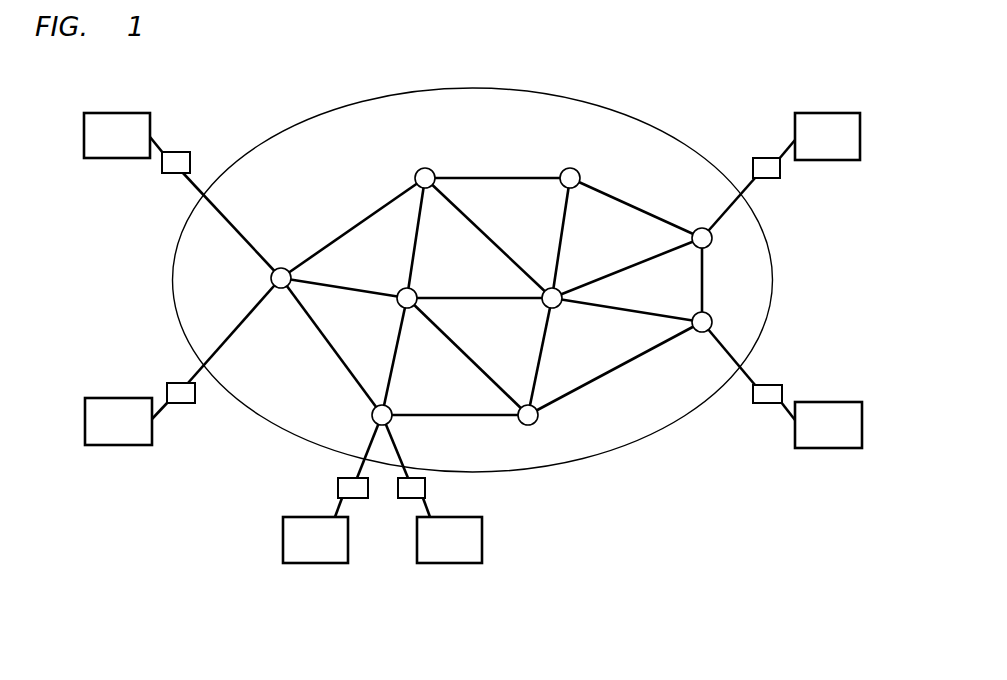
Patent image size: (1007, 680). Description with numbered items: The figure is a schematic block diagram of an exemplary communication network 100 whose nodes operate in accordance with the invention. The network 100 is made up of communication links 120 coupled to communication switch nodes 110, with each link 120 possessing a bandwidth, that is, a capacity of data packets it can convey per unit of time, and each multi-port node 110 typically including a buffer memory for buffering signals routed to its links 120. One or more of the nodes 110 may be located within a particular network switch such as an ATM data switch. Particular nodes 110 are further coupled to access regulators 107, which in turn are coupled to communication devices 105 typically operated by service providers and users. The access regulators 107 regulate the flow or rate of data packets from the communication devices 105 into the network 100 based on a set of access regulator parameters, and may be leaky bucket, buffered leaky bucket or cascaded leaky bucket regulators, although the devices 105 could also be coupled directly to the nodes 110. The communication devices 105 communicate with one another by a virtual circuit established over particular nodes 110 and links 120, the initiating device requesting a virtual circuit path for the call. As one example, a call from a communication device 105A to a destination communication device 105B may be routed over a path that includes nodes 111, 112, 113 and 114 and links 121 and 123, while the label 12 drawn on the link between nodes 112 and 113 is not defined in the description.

The communication network 100 is at (578, 100).
The communication device 105 is at (841, 96).
The initiating communication device 105A is at (132, 158).
The destination communication device 105B is at (854, 387).
The access regulator 107 is at (195, 132).
The communication switch node 110 is at (431, 169).
The node 111 is at (272, 282).
The node 112 is at (399, 305).
The node 113 is at (545, 305).
The node 114 is at (710, 311).
The communication link 120 is at (487, 179).
The link 121 is at (343, 288).
The link 123 is at (631, 309).
The link 12 is at (490, 298).